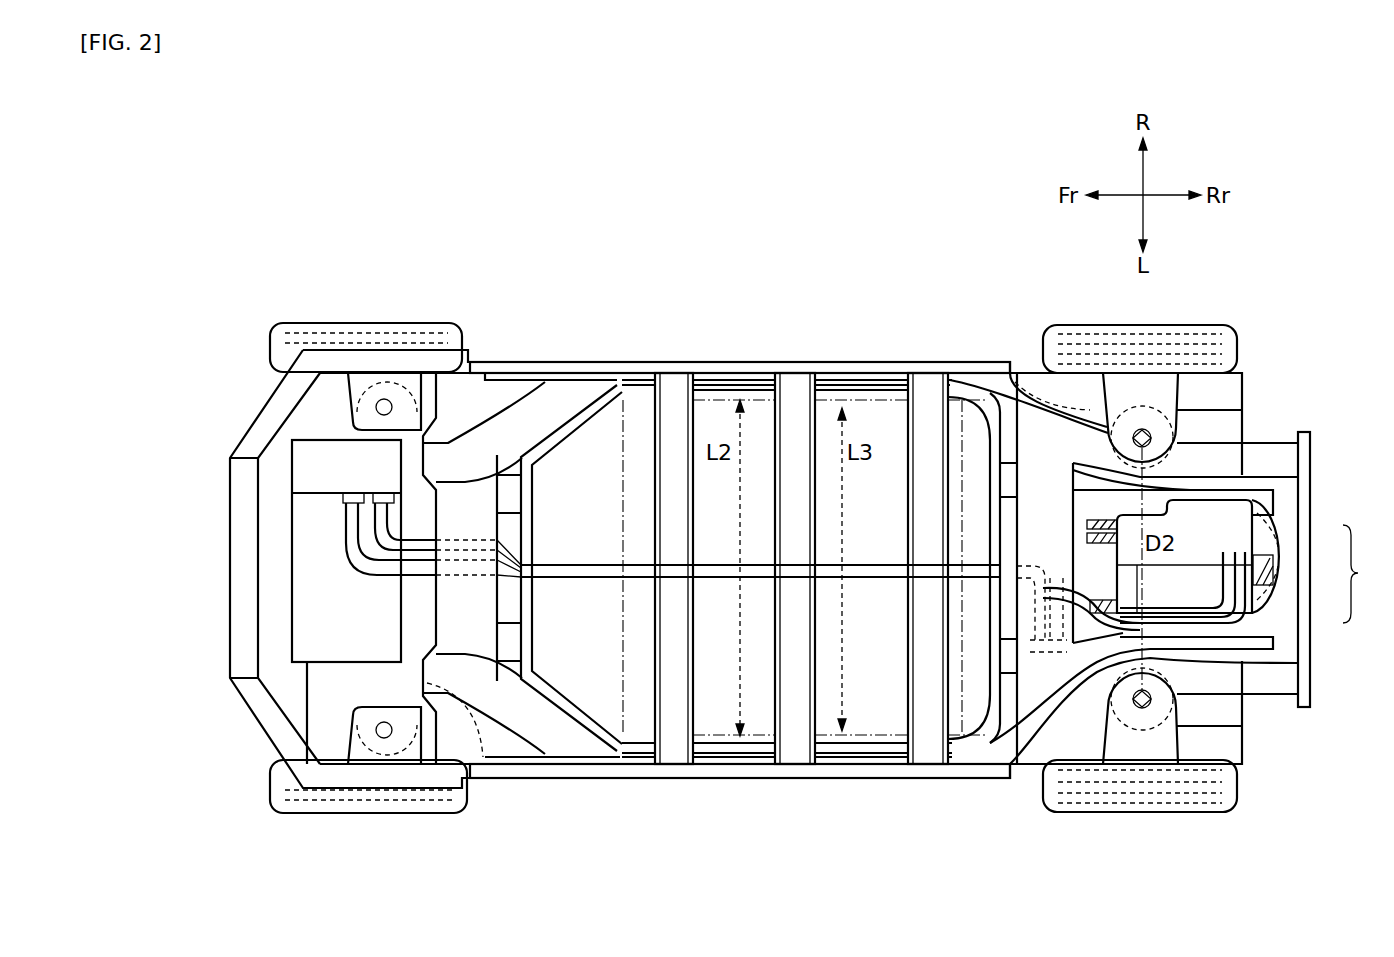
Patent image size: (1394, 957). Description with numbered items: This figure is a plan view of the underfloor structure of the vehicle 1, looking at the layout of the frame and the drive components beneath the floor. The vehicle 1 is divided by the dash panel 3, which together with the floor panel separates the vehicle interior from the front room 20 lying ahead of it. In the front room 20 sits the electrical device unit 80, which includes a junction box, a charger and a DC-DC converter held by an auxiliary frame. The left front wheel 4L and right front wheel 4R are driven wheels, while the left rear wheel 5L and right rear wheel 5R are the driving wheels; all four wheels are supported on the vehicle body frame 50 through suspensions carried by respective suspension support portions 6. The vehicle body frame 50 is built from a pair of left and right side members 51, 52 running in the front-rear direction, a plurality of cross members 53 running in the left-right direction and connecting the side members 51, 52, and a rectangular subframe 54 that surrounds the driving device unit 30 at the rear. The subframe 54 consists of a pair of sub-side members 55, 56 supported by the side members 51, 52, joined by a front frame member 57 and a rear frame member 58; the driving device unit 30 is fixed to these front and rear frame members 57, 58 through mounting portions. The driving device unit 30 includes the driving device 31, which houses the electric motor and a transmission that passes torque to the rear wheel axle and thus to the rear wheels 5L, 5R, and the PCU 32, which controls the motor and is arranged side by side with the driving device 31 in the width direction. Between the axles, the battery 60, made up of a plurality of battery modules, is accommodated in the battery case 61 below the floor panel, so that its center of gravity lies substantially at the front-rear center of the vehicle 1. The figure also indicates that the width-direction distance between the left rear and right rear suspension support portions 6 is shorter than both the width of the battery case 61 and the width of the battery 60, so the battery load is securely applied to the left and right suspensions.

The vehicle 1 is at (816, 266).
The dash panel 3 is at (435, 452).
The right front wheel 4R is at (405, 323).
The left front wheel 4L is at (400, 815).
The right rear wheel 5R is at (1178, 325).
The left rear wheel 5L is at (1177, 812).
The suspension support portion 6 is at (340, 406).
The front room 20 is at (288, 589).
The driving device unit 30 is at (1365, 574).
The driving device 31 is at (1258, 600).
The Power Control Unit (PCU) 32 is at (1255, 520).
The vehicle body frame 50 is at (890, 354).
The side member 51 is at (826, 362).
The side member 52 is at (850, 779).
The cross member 53 is at (460, 512).
The subframe 54 is at (1268, 512).
The sub-side member 55 is at (1265, 497).
The sub-side member 56 is at (1262, 640).
The front frame member 57 is at (1110, 625).
The rear frame member 58 is at (1258, 618).
The battery 60 is at (596, 416).
The battery case 61 is at (728, 391).
The electrical device unit 80 is at (307, 528).